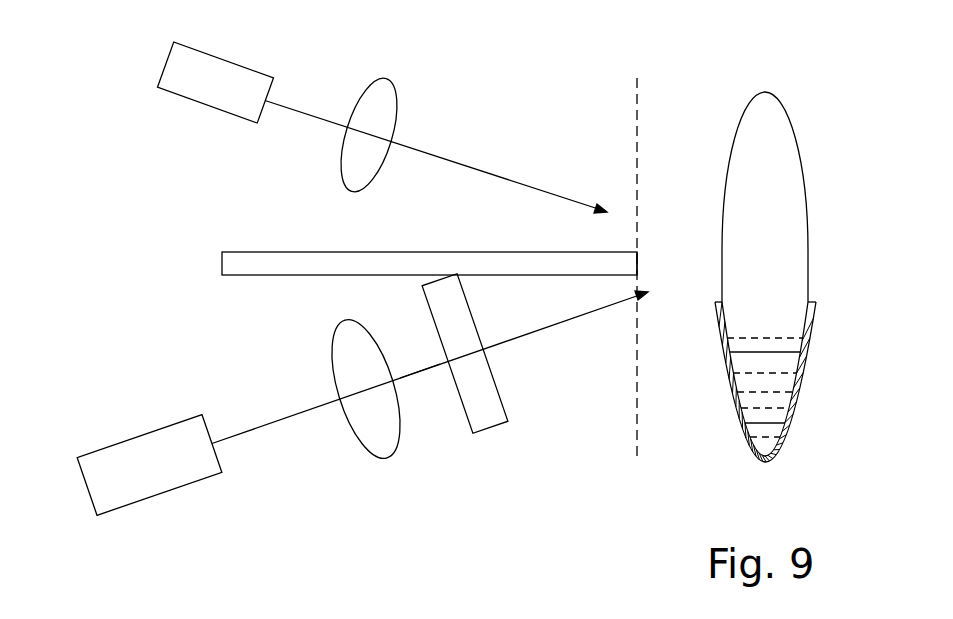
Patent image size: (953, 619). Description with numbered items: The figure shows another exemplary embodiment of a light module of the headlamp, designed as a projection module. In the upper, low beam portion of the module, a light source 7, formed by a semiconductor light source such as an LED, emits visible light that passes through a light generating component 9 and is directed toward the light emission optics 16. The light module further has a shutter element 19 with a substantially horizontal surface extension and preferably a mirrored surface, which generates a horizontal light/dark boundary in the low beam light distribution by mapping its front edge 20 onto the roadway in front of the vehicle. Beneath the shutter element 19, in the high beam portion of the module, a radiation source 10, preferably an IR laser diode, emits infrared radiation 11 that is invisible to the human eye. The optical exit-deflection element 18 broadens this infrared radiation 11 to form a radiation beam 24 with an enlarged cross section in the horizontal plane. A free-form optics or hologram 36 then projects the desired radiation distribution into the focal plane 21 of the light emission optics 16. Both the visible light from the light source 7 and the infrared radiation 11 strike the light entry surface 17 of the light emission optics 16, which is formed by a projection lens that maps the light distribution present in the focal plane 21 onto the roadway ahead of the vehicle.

The light source 7 is at (204, 94).
The light generating component 9 is at (380, 93).
The radiation source 10 is at (134, 475).
The infrared radiation 11 is at (282, 415).
The light emission optics 16 is at (768, 117).
The light entry surface 17 is at (728, 164).
The optical exit-deflection element 18 is at (388, 440).
The shutter element 19 is at (280, 262).
The front edge 20 is at (638, 258).
The focal plane 21 is at (638, 113).
The radiation beam 24 is at (427, 372).
The hologram 36 is at (490, 422).